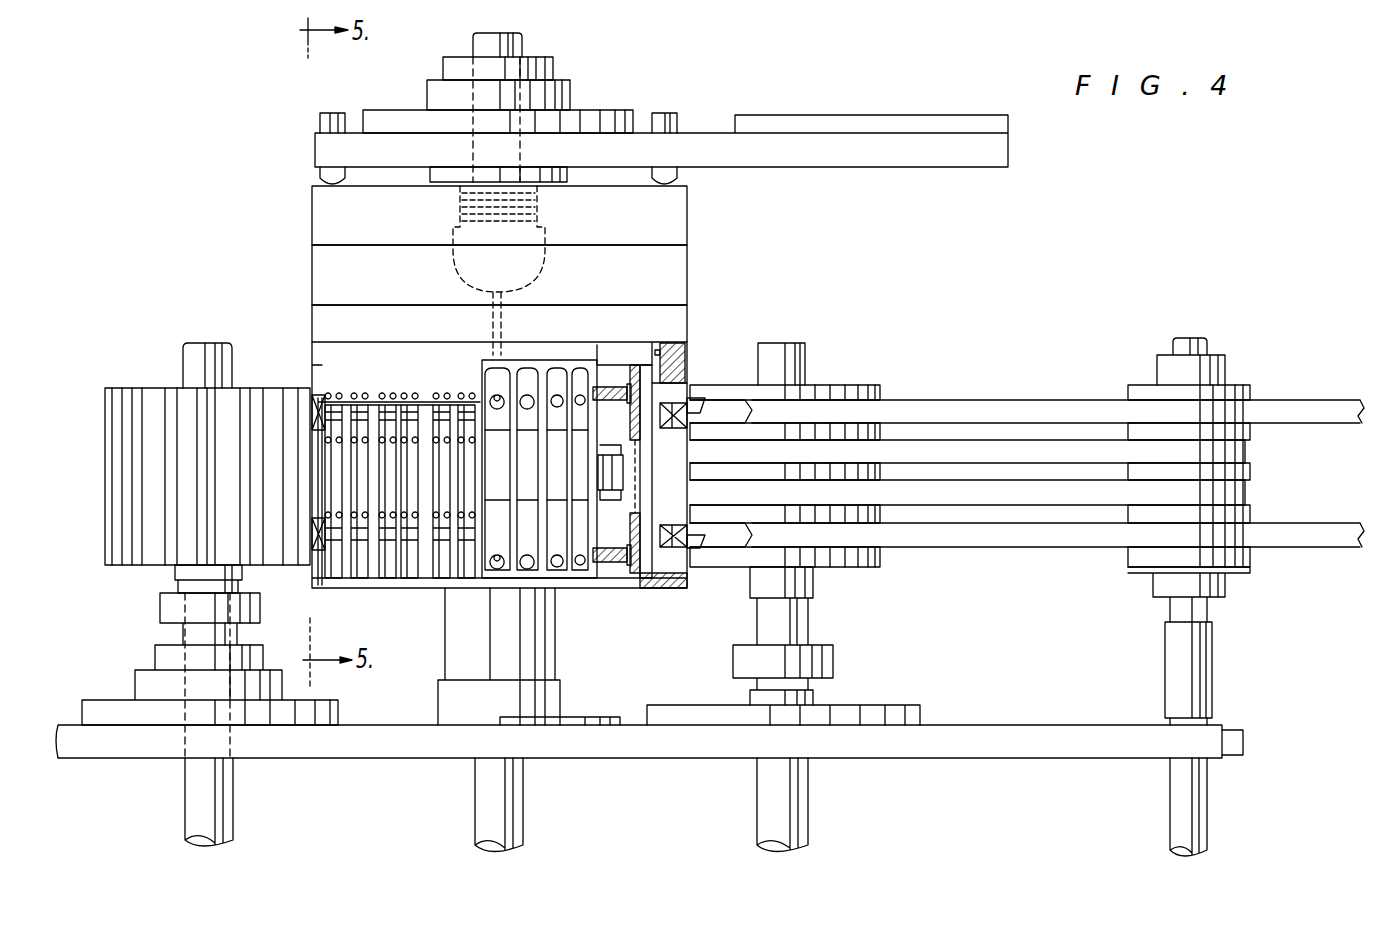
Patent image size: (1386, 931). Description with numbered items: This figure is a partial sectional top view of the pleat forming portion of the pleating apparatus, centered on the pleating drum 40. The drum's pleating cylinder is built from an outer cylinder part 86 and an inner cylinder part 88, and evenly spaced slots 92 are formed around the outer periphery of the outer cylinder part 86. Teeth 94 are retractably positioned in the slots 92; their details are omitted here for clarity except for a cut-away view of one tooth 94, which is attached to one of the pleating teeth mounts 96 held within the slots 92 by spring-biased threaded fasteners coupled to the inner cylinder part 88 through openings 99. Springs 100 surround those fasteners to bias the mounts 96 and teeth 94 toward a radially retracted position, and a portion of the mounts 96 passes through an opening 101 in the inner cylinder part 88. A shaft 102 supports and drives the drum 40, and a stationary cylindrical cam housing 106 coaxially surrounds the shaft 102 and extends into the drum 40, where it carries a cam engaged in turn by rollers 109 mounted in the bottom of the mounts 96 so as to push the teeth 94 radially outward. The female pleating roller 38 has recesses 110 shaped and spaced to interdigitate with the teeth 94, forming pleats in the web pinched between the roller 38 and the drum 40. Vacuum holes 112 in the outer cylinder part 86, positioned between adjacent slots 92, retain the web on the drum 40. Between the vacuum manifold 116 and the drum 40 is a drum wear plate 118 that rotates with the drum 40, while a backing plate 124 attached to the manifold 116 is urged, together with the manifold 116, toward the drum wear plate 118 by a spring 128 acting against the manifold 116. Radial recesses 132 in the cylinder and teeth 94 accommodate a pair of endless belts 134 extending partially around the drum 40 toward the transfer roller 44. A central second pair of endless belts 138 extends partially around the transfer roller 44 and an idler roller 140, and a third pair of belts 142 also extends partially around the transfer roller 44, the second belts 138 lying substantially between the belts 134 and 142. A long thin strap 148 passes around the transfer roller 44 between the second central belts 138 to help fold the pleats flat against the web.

The female pleating roller 38 is at (158, 372).
The pleating drum 40 is at (603, 604).
The transfer roller 44 is at (848, 385).
The outer cylinder part 86 is at (318, 580).
The inner cylinder part 88 is at (358, 585).
The slots 92 is at (417, 585).
The teeth 94 is at (675, 487).
The pleating teeth mounts 96 is at (628, 490).
The openings 99 is at (560, 590).
The springs 100 is at (600, 385).
The opening 101 is at (470, 560).
The shaft 102 is at (513, 800).
The cam housing 106 is at (440, 710).
The rollers 109 is at (612, 456).
The recesses 110 is at (135, 548).
The vacuum holes 112 is at (306, 383).
The vacuum manifold 116 is at (687, 288).
The drum wear plate 118 is at (687, 318).
The backing plate 124 is at (687, 222).
The spring 128 is at (455, 205).
The radial recesses 132 is at (690, 380).
The endless belts 134 is at (692, 410).
The second pair of endless belts 138 is at (1045, 425).
The idler roller 140 is at (1240, 385).
The third pair of belts 142 is at (960, 425).
The strap 148 is at (636, 380).